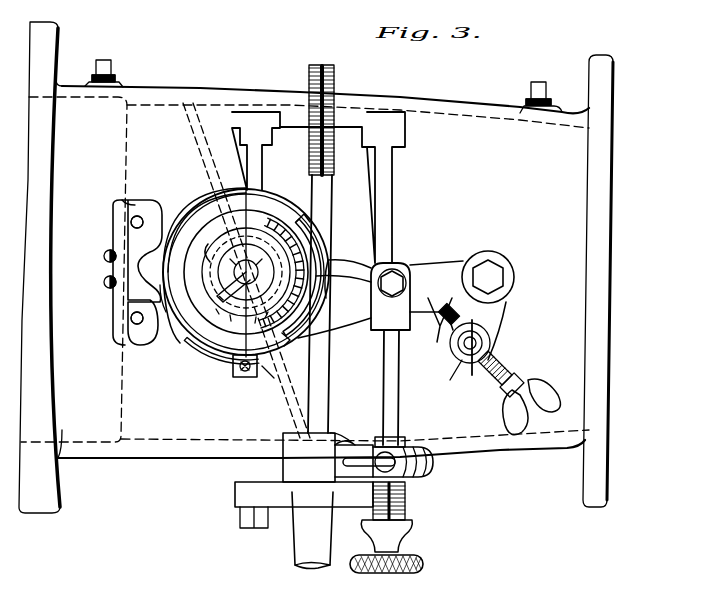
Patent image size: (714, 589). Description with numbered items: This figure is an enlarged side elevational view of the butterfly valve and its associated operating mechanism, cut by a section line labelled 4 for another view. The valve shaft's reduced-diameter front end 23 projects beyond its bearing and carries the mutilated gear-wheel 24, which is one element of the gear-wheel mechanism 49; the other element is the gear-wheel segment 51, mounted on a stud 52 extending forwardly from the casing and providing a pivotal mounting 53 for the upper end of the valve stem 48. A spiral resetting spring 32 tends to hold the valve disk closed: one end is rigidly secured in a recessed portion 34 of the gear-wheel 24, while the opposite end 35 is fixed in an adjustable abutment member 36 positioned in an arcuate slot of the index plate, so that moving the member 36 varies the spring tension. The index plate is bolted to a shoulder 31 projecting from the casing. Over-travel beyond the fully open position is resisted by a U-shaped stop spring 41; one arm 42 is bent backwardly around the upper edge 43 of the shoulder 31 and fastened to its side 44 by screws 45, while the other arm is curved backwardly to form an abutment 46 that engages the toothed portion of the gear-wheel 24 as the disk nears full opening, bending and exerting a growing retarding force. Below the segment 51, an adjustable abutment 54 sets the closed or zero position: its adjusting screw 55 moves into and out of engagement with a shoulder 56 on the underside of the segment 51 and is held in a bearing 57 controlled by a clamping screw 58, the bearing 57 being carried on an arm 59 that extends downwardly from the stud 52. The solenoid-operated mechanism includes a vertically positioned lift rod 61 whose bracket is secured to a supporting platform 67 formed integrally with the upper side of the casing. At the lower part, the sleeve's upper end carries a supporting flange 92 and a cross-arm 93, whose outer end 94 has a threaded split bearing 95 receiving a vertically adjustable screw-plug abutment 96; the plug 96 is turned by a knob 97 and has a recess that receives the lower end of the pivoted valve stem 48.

The section line 4- 4 is at (247, 162).
The front end 23 is at (242, 278).
The mutilated gear-wheel 24 is at (270, 212).
The shoulder 31 is at (132, 233).
The spiral resetting spring 32 is at (222, 360).
The recessed portion 34 is at (190, 352).
The opposite end 35 is at (236, 368).
The adjustable abutment member 36 is at (258, 371).
The stop spring 41 is at (152, 300).
The arm 42 is at (128, 228).
The upper edge 43 is at (133, 200).
The side 44 is at (128, 312).
The screws 45 is at (106, 283).
The abutment 46 is at (200, 235).
The valve stem 48 is at (400, 381).
The gear-wheel mechanism 49 is at (390, 286).
The gear-wheel segment 51 is at (340, 258).
The stud 52 is at (492, 277).
The pivotal mounting 53 is at (394, 286).
The adjustable abutment 54 is at (455, 320).
The adjusting screw 55 is at (508, 370).
The shoulder 56 is at (435, 325).
The bearing 57 is at (480, 343).
The clamping screw 58 is at (457, 384).
The arm 59 is at (500, 325).
The lift rod 61 is at (322, 428).
The supporting platform 67 is at (250, 125).
The supporting flange 92 is at (318, 495).
The cross-arm 93 is at (388, 440).
The outer end 94 is at (434, 466).
The threaded split bearing 95 is at (408, 486).
The adjustable abutment 96 is at (400, 458).
The knob 97 is at (424, 564).